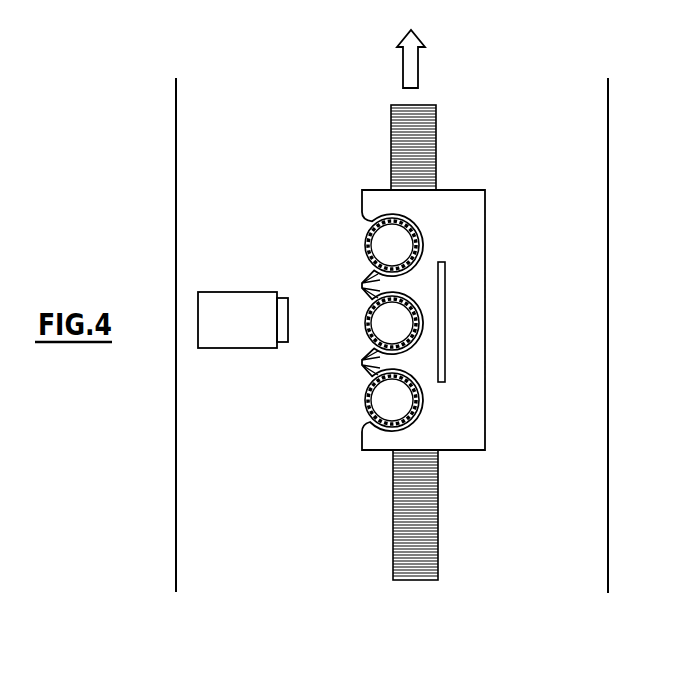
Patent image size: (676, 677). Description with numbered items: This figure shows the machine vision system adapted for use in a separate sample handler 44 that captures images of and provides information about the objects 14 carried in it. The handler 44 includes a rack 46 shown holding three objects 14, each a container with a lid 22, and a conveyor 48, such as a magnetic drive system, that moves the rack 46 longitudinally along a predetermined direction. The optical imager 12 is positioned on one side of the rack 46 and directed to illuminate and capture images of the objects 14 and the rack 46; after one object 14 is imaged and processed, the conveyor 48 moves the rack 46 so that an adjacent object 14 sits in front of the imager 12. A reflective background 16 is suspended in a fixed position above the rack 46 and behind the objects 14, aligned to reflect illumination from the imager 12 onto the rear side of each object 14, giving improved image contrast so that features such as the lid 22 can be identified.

The sample handler 44 is at (125, 89).
The optical imager 12 is at (251, 332).
The target object 14 is at (405, 257).
The reflective background 16 is at (446, 352).
The lid 22 is at (363, 243).
The rack 46 is at (472, 228).
The conveyor 48 is at (438, 567).